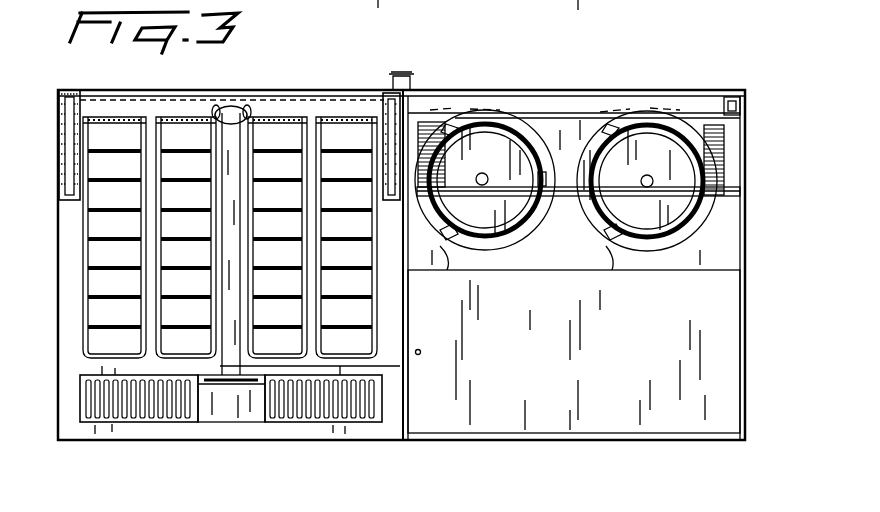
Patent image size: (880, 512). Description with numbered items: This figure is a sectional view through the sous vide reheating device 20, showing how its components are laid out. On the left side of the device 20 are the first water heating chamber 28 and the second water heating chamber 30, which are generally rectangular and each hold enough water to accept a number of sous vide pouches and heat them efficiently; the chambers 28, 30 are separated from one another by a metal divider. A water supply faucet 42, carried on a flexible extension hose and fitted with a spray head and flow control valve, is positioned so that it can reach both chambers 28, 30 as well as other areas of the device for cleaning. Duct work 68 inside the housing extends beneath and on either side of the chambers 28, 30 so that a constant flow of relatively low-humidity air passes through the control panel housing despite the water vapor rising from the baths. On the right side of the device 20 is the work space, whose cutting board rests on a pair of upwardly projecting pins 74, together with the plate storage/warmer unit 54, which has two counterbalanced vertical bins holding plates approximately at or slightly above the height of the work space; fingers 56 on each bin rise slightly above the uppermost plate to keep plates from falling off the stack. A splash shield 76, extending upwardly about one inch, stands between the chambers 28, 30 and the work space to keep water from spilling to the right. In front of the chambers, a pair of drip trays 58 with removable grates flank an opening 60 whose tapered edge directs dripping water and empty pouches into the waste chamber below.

The sous vide reheating device 20 is at (714, 86).
The first water heating chamber 28 is at (84, 304).
The second water heating chamber 30 is at (380, 322).
The water supply faucet 42 is at (236, 108).
The plate storage/warmer unit 54 is at (712, 213).
The fingers 56 is at (448, 242).
The drip trays 58 is at (134, 423).
The opening 60 is at (240, 412).
The duct work 68 is at (70, 150).
The pins 74 is at (421, 350).
The splash shield 76 is at (407, 414).